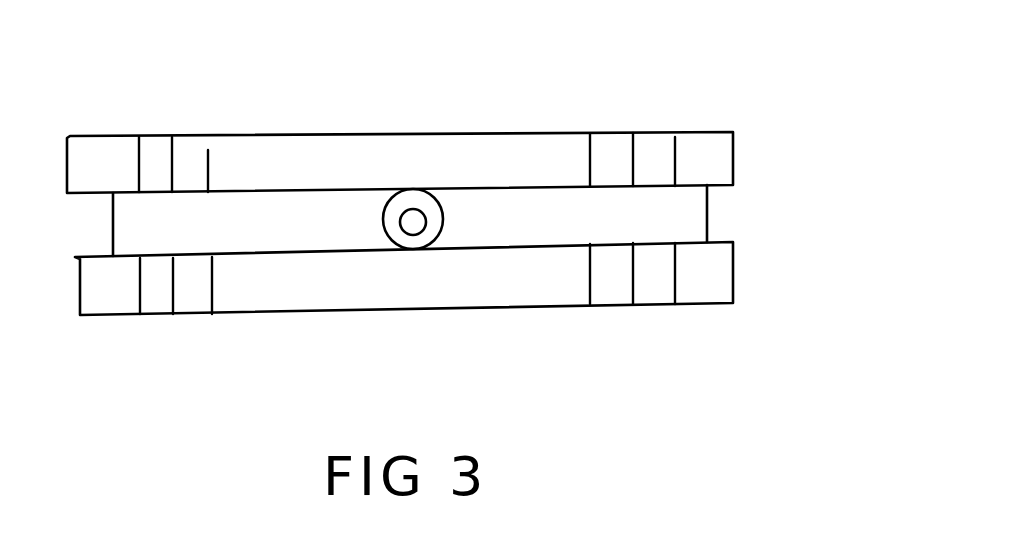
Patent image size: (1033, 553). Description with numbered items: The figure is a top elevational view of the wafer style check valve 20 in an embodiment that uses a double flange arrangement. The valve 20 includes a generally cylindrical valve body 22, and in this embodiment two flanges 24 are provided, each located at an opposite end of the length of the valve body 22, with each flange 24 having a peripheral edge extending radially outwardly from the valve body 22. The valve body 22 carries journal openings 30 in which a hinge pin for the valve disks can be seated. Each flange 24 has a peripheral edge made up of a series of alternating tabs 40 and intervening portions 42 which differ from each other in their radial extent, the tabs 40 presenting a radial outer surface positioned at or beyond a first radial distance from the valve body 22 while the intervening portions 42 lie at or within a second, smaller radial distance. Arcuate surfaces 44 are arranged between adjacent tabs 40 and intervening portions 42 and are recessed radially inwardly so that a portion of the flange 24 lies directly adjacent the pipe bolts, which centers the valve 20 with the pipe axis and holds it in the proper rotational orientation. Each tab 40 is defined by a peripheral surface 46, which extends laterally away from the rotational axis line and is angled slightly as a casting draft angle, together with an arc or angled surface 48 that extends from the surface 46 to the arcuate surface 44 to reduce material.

The wafer style check valve 20 is at (727, 350).
The valve body 22 is at (708, 220).
The flange 24 is at (738, 160).
The journal openings 30 is at (407, 207).
The tabs 40 is at (507, 165).
The intervening portions 42 is at (683, 148).
The arcuate surfaces 44 is at (643, 155).
The peripheral surface 46 is at (452, 165).
The angled surface 48 is at (603, 158).